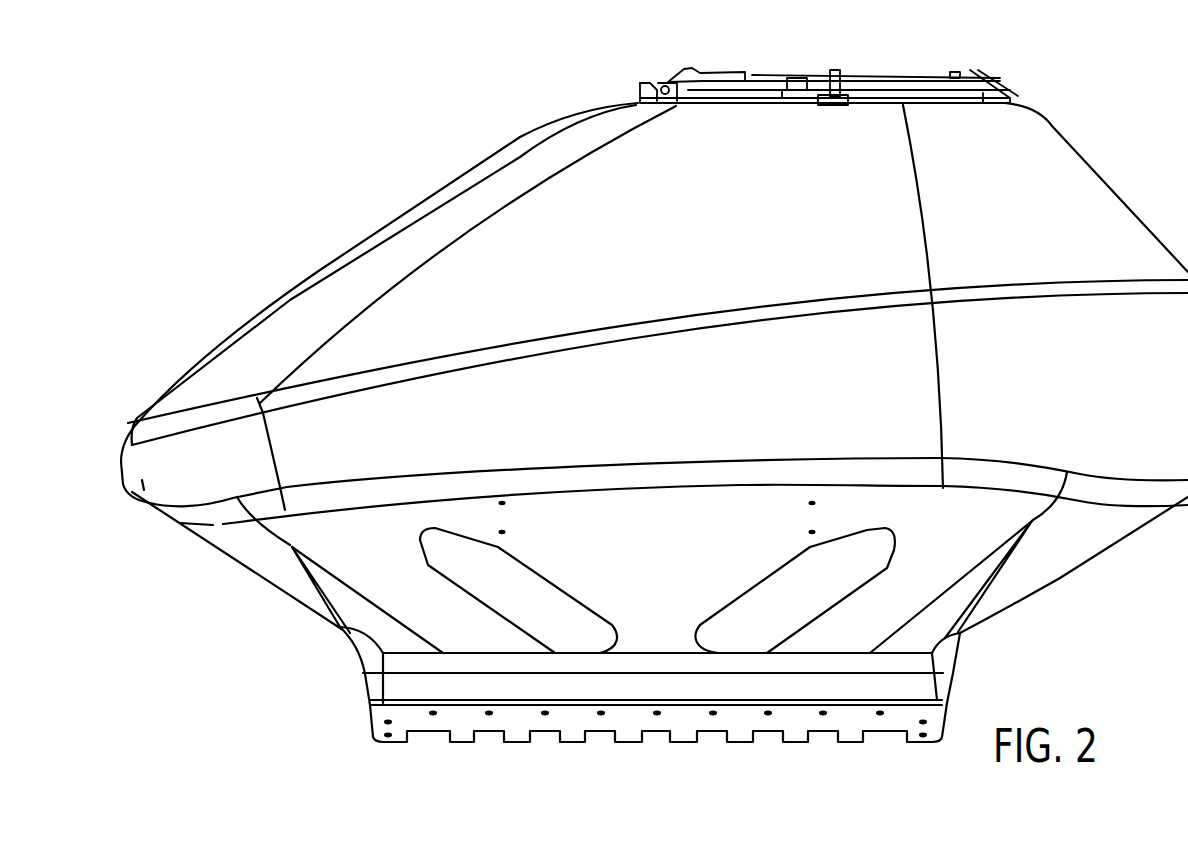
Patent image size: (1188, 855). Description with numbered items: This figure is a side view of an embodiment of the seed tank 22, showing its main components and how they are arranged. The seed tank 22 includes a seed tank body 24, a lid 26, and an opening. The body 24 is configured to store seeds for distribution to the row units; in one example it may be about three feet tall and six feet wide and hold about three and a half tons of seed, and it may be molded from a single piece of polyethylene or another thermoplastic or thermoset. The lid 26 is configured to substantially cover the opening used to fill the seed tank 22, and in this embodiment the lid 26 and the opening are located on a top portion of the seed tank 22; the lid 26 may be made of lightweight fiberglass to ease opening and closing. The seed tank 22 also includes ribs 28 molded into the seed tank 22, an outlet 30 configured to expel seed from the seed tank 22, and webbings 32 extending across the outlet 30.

The seed tank 22 is at (445, 130).
The seed tank body 24 is at (457, 270).
The lid 26 is at (785, 72).
The ribs 28 is at (505, 585).
The outlet 30 is at (430, 743).
The webbings 32 is at (573, 743).